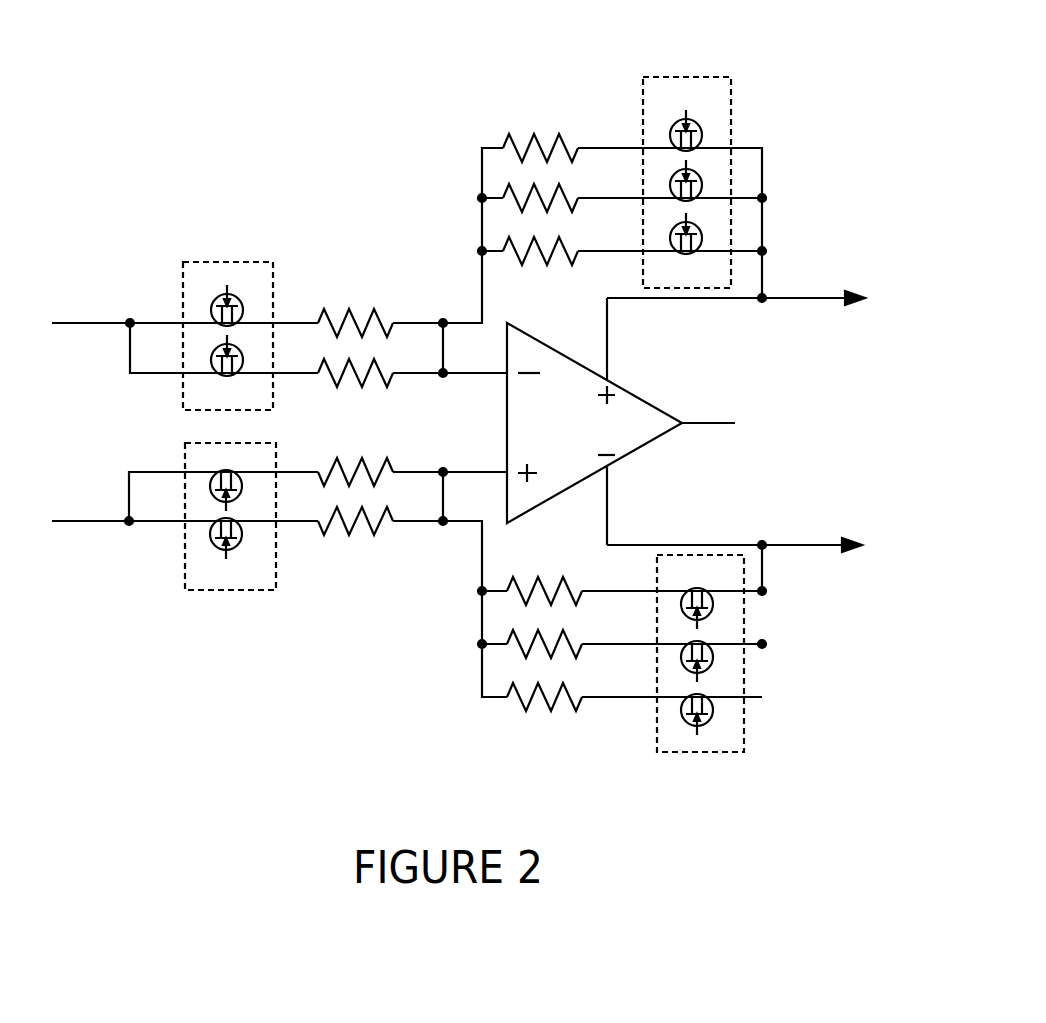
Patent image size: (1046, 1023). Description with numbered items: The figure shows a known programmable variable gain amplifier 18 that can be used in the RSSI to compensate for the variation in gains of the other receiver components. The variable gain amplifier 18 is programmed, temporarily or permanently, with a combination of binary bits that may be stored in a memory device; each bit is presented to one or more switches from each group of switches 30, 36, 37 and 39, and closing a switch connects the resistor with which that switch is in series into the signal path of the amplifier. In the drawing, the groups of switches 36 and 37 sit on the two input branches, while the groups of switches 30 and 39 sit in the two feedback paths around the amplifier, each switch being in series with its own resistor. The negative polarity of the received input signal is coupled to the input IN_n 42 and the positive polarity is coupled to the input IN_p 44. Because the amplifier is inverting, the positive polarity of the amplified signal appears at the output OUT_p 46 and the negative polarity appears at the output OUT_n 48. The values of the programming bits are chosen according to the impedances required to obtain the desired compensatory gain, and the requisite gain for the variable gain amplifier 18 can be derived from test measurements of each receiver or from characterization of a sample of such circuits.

The programmable variable gain amplifier 18 is at (242, 176).
The group of switches 30 is at (731, 114).
The group of switches 36 is at (232, 262).
The group of switches 37 is at (243, 590).
The group of switches 39 is at (745, 720).
The input IN_n 42 is at (103, 323).
The input IN_p 44 is at (103, 522).
The output OUT_p 46 is at (810, 298).
The output OUT_n 48 is at (835, 545).